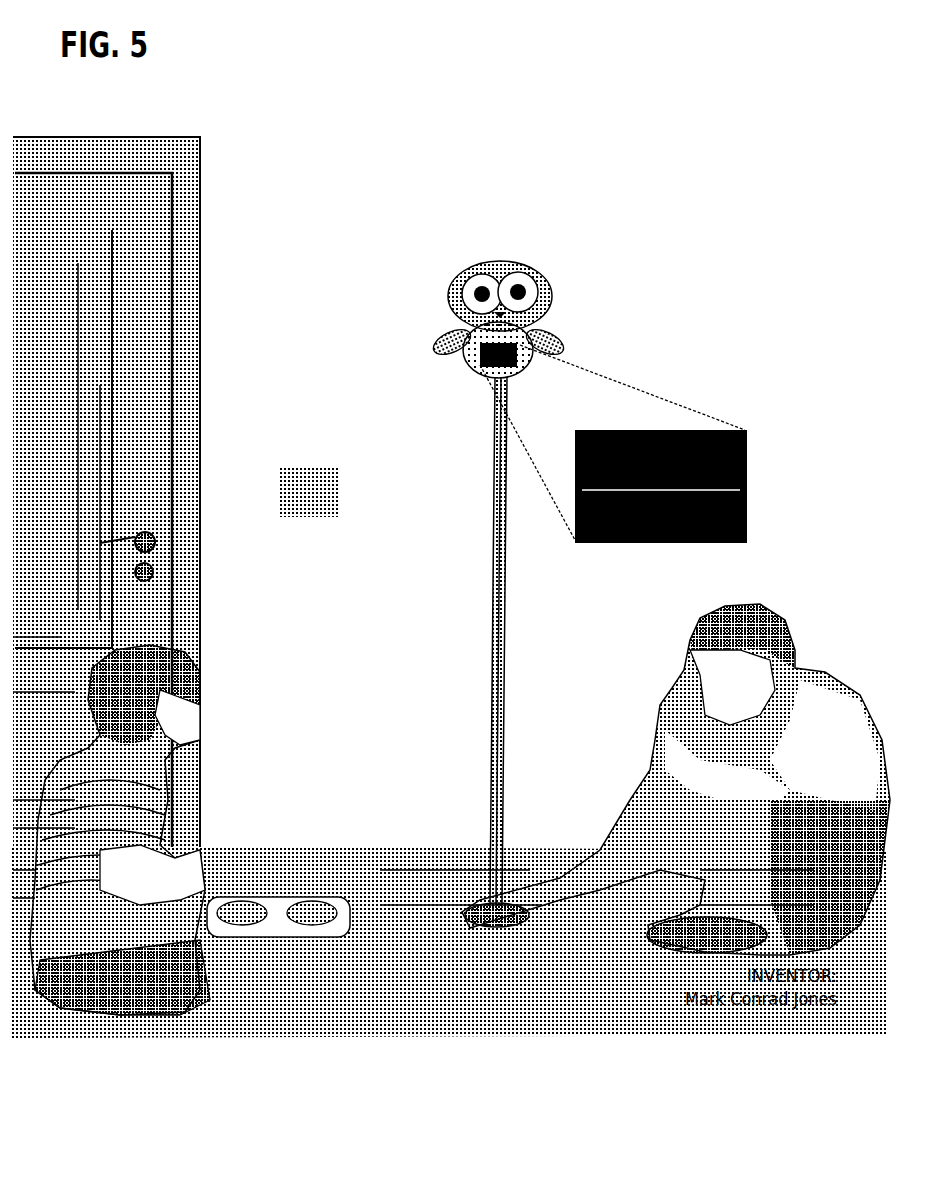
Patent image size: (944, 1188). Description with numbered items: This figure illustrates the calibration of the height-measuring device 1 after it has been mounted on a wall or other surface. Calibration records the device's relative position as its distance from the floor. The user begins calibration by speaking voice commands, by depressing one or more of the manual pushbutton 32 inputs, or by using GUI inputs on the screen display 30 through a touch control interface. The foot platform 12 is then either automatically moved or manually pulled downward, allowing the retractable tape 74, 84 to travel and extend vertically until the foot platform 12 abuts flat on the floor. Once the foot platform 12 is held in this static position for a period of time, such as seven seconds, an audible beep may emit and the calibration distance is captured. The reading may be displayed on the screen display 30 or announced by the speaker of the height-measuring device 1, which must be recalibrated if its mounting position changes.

The height-measuring device 1 is at (450, 310).
The manual pushbutton 32 is at (553, 313).
The screen display 30 is at (747, 462).
The retractable tape 74 is at (418, 640).
The retractable tape 84 is at (493, 650).
The foot platform 12 is at (493, 937).